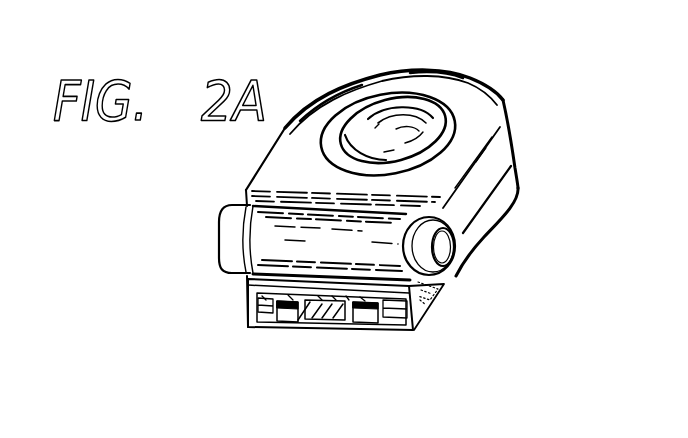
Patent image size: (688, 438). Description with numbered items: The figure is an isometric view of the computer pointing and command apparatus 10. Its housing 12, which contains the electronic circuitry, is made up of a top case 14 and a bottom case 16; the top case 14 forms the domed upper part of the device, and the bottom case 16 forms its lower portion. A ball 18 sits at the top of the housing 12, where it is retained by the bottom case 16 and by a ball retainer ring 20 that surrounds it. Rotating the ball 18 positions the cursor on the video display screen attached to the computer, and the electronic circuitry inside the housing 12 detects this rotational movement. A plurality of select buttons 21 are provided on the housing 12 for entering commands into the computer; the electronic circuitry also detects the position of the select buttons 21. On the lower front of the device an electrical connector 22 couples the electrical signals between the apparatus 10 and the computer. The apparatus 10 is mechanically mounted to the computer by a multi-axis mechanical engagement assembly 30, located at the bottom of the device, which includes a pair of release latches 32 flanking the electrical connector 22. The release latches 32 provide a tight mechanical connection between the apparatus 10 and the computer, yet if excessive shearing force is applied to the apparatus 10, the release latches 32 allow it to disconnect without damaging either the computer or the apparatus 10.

The computer pointing and command apparatus 10 is at (222, 283).
The housing 12 is at (520, 145).
The top case 14 is at (514, 143).
The bottom case 16 is at (472, 248).
The ball 18 is at (418, 105).
The ball retainer ring 20 is at (442, 101).
The select buttons 21 is at (330, 87).
The electrical connector 22 is at (328, 327).
The multi-axis mechanical engagement assembly 30 is at (400, 337).
The release latches 32 is at (288, 323).